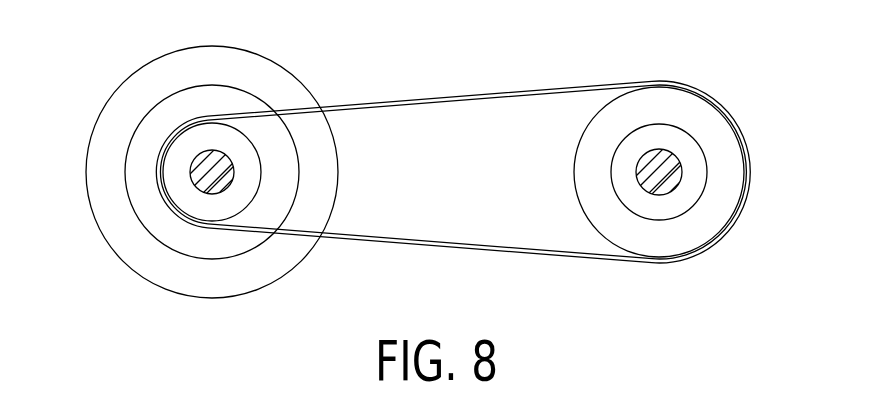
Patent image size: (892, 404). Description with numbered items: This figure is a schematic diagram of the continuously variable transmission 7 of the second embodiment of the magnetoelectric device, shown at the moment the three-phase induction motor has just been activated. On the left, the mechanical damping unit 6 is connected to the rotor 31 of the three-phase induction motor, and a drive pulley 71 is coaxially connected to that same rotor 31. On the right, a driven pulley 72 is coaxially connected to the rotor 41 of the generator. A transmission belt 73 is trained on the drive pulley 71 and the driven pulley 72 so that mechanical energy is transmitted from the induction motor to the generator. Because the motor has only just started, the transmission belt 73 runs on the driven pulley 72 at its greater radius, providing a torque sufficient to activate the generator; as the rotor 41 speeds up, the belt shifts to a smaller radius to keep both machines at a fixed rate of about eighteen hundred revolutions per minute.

The mechanical damping unit 6 is at (120, 83).
The continuously variable transmission 7 is at (493, 148).
The rotor 31 is at (203, 175).
The rotor 41 is at (668, 177).
The drive pulley 71 is at (152, 140).
The driven pulley 72 is at (728, 157).
The transmission belt 73 is at (425, 103).